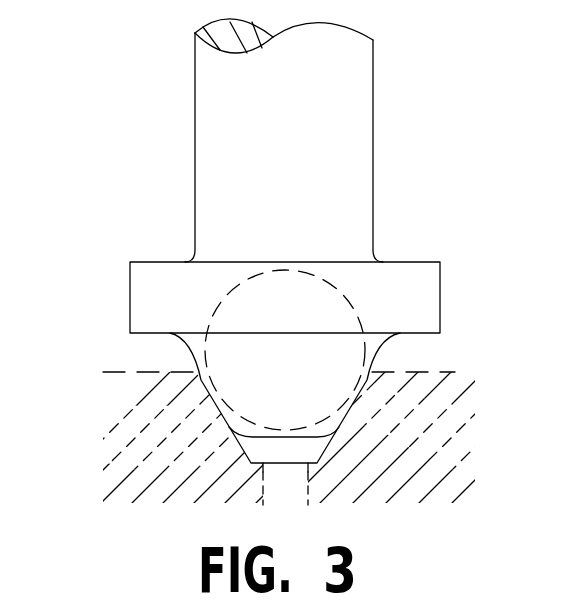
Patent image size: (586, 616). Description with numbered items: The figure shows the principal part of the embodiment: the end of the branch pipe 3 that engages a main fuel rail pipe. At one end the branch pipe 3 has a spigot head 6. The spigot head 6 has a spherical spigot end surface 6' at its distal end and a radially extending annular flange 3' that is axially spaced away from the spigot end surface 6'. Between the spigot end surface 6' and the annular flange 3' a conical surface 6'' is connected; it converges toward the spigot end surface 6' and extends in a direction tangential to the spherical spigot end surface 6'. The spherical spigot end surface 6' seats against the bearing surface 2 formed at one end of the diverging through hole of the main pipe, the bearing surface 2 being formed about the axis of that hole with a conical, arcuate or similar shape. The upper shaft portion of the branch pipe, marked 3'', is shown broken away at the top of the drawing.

The bearing surface 2 is at (242, 447).
The branch pipe 3 is at (253, 147).
The annular flange 3' is at (259, 297).
The upper shaft end 3'' is at (333, 48).
The spigot head 6 is at (203, 437).
The spigot end surface 6' is at (437, 459).
The conical surface 6'' is at (418, 428).